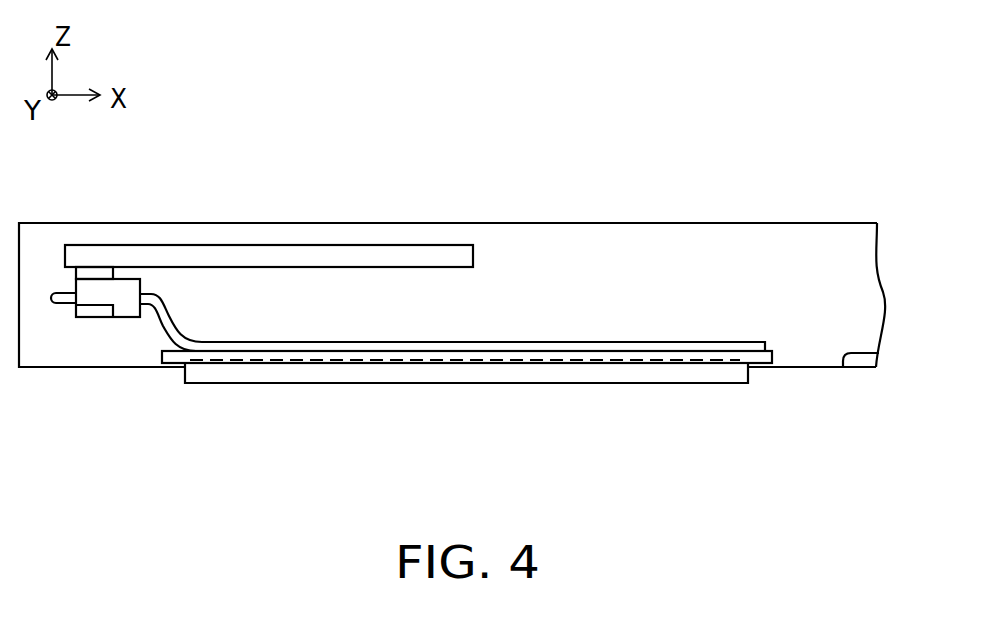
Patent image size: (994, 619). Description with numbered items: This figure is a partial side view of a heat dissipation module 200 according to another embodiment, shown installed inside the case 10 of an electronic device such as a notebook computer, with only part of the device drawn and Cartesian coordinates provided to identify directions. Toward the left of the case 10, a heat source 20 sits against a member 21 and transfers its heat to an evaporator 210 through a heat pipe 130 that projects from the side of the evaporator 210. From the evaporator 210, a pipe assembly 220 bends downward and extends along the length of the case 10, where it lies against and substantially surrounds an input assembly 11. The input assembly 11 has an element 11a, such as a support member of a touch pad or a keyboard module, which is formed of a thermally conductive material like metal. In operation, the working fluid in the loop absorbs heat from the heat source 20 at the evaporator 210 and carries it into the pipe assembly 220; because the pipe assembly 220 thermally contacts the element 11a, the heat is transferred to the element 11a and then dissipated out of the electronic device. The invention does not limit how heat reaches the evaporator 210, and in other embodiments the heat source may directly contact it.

The heat dissipation module 200 is at (755, 298).
The case 10 is at (858, 288).
The input assembly 11 is at (270, 370).
The element 11a is at (173, 353).
The heat source 20 is at (93, 273).
The circuit board 21 is at (172, 262).
The evaporator 210 is at (126, 317).
The heat pipe 130 is at (85, 317).
The pipe assembly 220 is at (610, 347).